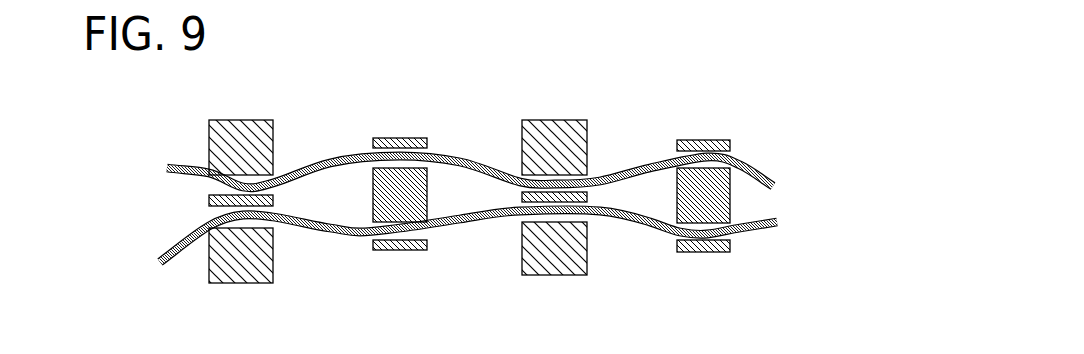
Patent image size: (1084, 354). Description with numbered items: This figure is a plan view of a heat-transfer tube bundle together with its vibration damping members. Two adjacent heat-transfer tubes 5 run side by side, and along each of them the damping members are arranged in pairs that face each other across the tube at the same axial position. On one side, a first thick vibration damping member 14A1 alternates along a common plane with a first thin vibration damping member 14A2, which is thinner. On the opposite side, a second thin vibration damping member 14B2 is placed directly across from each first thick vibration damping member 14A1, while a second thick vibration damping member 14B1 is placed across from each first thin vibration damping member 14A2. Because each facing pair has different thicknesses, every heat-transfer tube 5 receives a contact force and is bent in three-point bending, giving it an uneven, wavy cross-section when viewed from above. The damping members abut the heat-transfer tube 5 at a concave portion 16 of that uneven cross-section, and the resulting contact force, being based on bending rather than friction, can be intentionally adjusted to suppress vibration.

The heat-transfer tube 5 is at (762, 172).
The first thick vibration damping member 14A1 is at (275, 143).
The first thin vibration damping member 14A2 is at (407, 138).
The second thick vibration damping member 14B1 is at (432, 212).
The second thin vibration damping member 14B2 is at (207, 200).
The concave portion 16 is at (198, 168).